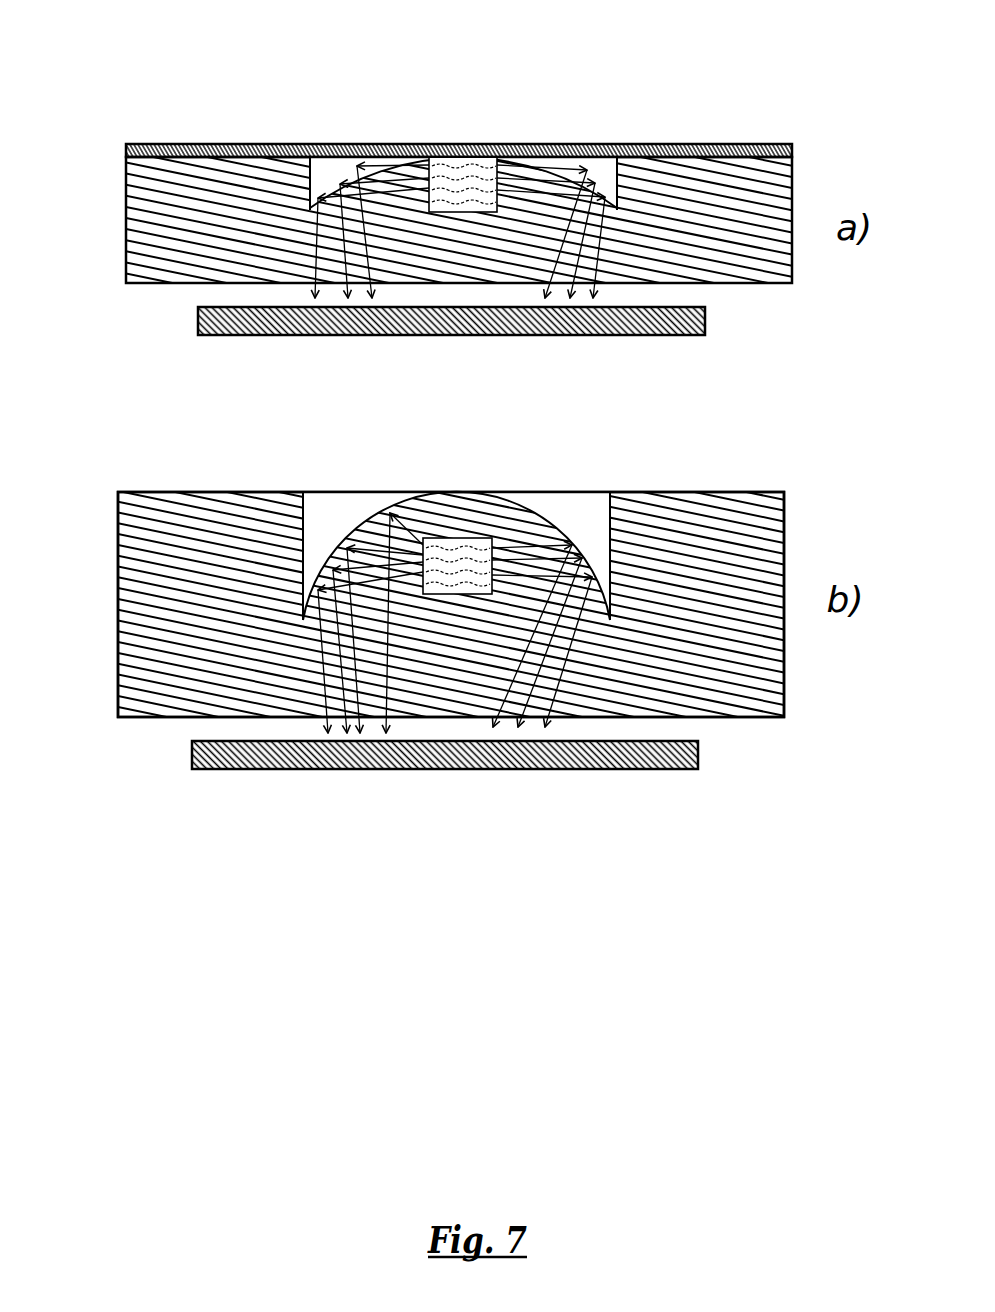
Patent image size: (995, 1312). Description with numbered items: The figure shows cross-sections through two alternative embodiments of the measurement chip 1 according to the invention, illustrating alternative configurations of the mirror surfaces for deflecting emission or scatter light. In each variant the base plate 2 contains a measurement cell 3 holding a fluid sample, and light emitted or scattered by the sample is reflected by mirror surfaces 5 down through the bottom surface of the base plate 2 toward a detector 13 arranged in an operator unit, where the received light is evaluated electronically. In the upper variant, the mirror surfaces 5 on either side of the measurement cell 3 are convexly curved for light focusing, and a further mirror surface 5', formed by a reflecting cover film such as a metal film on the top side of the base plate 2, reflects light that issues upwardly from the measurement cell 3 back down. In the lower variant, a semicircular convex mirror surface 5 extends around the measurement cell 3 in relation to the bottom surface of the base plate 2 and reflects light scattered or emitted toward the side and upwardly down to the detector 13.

The measurement chip 1 is at (126, 112).
The base plate 2 is at (215, 190).
The measurement cell 3 is at (458, 188).
The mirror surface 5 is at (465, 377).
The further mirror surface 5' is at (472, 88).
The detector 13 is at (318, 320).